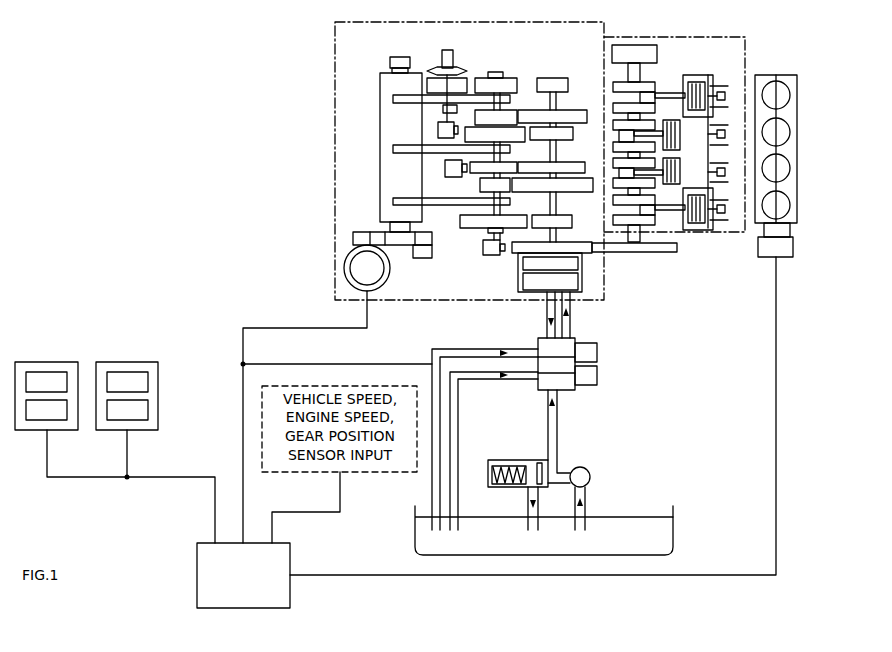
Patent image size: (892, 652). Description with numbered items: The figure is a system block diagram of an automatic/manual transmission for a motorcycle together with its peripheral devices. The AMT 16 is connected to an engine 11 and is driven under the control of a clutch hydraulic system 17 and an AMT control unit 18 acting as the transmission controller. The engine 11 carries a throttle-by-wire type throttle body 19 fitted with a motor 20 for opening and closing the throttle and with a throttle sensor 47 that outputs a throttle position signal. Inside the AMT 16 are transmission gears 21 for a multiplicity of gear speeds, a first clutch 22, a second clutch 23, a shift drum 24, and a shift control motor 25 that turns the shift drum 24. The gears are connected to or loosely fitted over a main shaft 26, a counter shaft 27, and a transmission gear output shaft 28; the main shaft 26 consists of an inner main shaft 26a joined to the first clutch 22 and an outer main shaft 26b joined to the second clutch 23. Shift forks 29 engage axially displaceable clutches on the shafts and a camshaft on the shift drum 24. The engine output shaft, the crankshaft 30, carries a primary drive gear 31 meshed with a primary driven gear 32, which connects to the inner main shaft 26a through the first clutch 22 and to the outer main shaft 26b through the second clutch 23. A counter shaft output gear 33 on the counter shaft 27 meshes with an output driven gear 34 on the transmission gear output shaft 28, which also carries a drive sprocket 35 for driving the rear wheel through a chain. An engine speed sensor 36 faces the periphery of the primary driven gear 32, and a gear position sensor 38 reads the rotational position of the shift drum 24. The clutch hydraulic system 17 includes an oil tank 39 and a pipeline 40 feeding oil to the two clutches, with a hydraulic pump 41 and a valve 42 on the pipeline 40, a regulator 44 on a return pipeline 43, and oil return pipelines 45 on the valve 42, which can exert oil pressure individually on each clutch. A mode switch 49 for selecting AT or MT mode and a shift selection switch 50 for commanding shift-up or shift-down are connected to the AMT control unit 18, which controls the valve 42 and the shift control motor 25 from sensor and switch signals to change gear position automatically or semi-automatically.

The engine 11 is at (752, 47).
The AMT 16 is at (326, 69).
The clutch hydraulic system 17 is at (683, 536).
The AMT control unit 18 is at (290, 556).
The throttle body 19 is at (797, 85).
The motor 20 is at (780, 258).
The transmission gears 21 is at (450, 265).
The first clutch 22 is at (582, 282).
The second clutch 23 is at (582, 260).
The shift drum 24 is at (385, 86).
The shift control motor 25 is at (344, 272).
The main shaft 26 is at (562, 152).
The inner main shaft 26a is at (560, 238).
The outer main shaft 26b is at (562, 211).
The counter shaft 27 is at (490, 212).
The transmission gear output shaft 28 is at (443, 110).
The shift forks 29 is at (400, 100).
The crankshaft 30 is at (640, 237).
The primary drive gear 31 is at (677, 250).
The primary driven gear 32 is at (515, 253).
The counter shaft output gear 33 is at (505, 78).
The output driven gear 34 is at (456, 72).
The drive sprocket 35 is at (442, 69).
The engine speed sensor 36 is at (483, 249).
The gear position sensor 38 is at (390, 60).
The oil tank 39 is at (415, 529).
The pipeline 40 is at (557, 431).
The hydraulic pump 41 is at (590, 477).
The valve 42 is at (597, 352).
The return pipeline 43 is at (528, 502).
The regulator 44 is at (490, 460).
The oil return pipelines 45 is at (448, 503).
The throttle sensor 47 is at (790, 230).
The mode switch 49 is at (141, 362).
The shift selection switch 50 is at (41, 362).